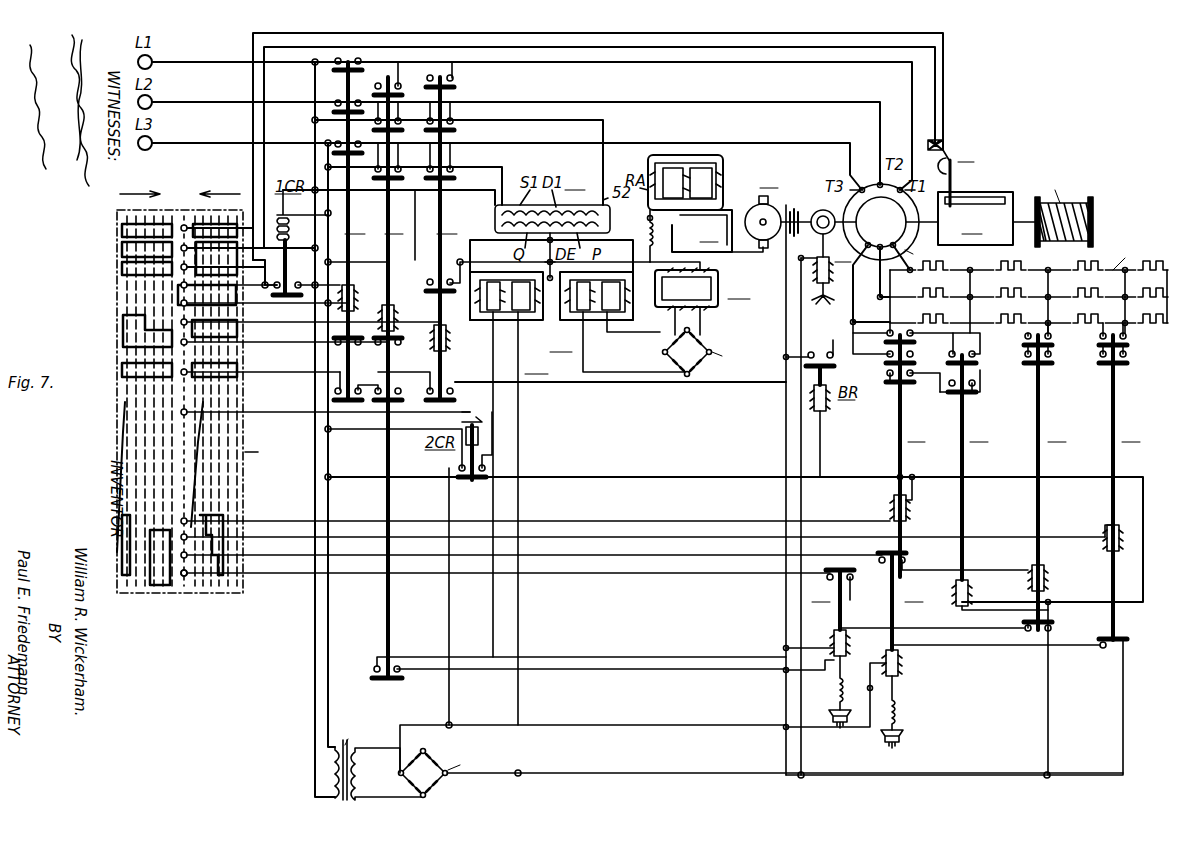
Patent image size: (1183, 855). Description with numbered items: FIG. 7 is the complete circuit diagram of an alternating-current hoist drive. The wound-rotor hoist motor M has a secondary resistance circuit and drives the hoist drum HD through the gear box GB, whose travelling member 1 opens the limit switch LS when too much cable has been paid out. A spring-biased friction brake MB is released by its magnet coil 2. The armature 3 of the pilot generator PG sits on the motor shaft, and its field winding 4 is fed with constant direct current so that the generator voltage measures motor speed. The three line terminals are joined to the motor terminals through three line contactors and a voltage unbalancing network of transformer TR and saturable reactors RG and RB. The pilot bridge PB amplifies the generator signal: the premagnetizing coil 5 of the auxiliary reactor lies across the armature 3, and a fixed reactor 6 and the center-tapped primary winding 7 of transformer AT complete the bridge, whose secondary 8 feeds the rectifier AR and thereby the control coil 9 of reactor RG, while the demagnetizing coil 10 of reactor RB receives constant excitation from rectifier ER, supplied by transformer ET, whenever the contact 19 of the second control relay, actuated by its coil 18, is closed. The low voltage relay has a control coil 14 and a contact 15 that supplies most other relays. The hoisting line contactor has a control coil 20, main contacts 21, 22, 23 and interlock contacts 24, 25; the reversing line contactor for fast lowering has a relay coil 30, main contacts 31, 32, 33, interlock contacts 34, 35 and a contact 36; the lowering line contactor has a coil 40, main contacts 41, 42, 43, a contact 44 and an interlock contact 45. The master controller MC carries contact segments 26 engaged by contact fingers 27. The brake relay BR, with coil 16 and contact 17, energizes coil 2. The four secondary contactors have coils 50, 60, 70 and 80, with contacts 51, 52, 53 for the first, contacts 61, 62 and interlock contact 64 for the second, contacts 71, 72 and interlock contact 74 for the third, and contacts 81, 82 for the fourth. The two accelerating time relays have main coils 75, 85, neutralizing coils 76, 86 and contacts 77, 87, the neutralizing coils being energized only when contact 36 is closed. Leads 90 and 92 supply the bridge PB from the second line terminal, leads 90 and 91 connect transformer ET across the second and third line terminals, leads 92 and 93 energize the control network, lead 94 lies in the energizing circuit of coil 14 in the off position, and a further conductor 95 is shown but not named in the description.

The travelling member 1 is at (955, 189).
The magnet coil 2 is at (818, 285).
The armature 3 is at (750, 234).
The field winding 4 is at (797, 212).
The premagnetizing coil 5 is at (688, 185).
The reactor 6 is at (658, 236).
The center-tapped primary winding 7 is at (705, 272).
The secondary 8 is at (690, 312).
The control coil 9 is at (597, 322).
The demagnetizing coil 10 is at (496, 320).
The control coil 14 is at (294, 237).
The contact 15 is at (292, 282).
The coil 16 is at (826, 400).
The contact 17 is at (820, 352).
The coil 18 is at (482, 425).
The contact 19 is at (487, 476).
The control coil 20 is at (356, 295).
The main contact 21 is at (349, 68).
The main contact 22 is at (345, 110).
The main contact 23 is at (345, 150).
The interlock contact 24 is at (352, 348).
The interlock contact 25 is at (350, 405).
The contact segment 26 is at (232, 520).
The contact finger 27 is at (186, 578).
The relay coil 30 is at (396, 311).
The main contact 31 is at (395, 95).
The main contact 32 is at (380, 123).
The main contact 33 is at (380, 178).
The interlock contact 34 is at (392, 348).
The interlock contact 35 is at (396, 402).
The contact 36 is at (386, 680).
The coil 40 is at (447, 340).
The main contact 41 is at (450, 87).
The main contact 42 is at (454, 131).
The main contact 43 is at (454, 179).
The contact 44 is at (435, 282).
The interlock contact 45 is at (454, 402).
The coil 50 is at (910, 510).
The contact 51 is at (915, 342).
The contact 52 is at (886, 364).
The contact 53 is at (910, 385).
The coil 60 is at (1106, 530).
The contact 61 is at (1128, 347).
The contact 62 is at (1128, 366).
The interlock contact 64 is at (1110, 648).
The coil 70 is at (1048, 571).
The contact 71 is at (1053, 347).
The contact 72 is at (1053, 366).
The interlock contact 74 is at (1052, 625).
The main coil 75 is at (900, 658).
The neutralizing coil 76 is at (900, 686).
The contact 77 is at (900, 565).
The coil 80 is at (970, 586).
The contact 81 is at (978, 364).
The contact 82 is at (978, 394).
The main coil 85 is at (848, 640).
The neutralizing coil 86 is at (833, 668).
The contact 87 is at (850, 582).
The lead 90 is at (315, 162).
The lead 91 is at (331, 242).
The lead 92 is at (421, 225).
The lead 93 is at (358, 271).
The lead 94 is at (271, 274).
The conductor 95 is at (735, 529).